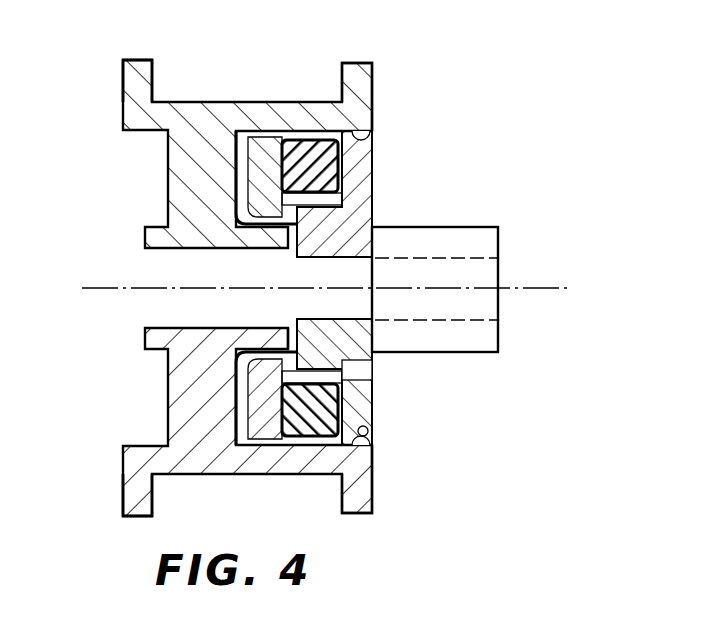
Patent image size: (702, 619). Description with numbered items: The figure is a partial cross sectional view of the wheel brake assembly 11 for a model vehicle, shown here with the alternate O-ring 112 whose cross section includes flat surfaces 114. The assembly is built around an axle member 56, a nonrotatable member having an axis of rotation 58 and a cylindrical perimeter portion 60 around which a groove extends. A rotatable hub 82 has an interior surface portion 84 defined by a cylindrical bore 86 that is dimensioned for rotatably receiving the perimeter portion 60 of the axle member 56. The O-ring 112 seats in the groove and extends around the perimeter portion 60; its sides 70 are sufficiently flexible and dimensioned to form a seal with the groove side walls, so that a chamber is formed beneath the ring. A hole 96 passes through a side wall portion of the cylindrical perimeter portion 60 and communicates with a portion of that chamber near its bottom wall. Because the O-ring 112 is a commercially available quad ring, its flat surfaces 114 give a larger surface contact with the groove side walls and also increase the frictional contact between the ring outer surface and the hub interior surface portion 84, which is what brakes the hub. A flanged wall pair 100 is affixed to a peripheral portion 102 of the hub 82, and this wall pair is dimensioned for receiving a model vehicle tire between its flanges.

The wheel brake assembly 11 is at (450, 76).
The axle member 56 is at (450, 228).
The axis of rotation 58 is at (100, 285).
The cylindrical perimeter portion 60 is at (372, 198).
The sides 70 is at (329, 289).
The rotatable hub 82 is at (132, 170).
The interior surface portion 84 is at (368, 435).
The cylindrical bore 86 is at (365, 147).
The hole 96 is at (363, 368).
The flanged wall pair 100 is at (172, 50).
The peripheral portion 102 is at (122, 107).
The O-ring 112 is at (300, 150).
The flat surfaces 114 is at (296, 345).